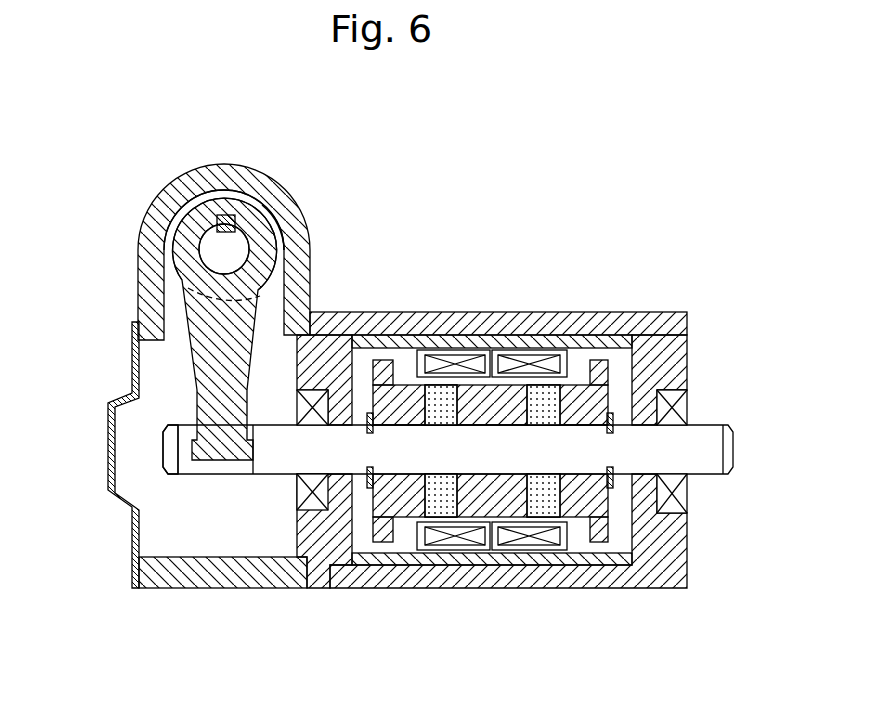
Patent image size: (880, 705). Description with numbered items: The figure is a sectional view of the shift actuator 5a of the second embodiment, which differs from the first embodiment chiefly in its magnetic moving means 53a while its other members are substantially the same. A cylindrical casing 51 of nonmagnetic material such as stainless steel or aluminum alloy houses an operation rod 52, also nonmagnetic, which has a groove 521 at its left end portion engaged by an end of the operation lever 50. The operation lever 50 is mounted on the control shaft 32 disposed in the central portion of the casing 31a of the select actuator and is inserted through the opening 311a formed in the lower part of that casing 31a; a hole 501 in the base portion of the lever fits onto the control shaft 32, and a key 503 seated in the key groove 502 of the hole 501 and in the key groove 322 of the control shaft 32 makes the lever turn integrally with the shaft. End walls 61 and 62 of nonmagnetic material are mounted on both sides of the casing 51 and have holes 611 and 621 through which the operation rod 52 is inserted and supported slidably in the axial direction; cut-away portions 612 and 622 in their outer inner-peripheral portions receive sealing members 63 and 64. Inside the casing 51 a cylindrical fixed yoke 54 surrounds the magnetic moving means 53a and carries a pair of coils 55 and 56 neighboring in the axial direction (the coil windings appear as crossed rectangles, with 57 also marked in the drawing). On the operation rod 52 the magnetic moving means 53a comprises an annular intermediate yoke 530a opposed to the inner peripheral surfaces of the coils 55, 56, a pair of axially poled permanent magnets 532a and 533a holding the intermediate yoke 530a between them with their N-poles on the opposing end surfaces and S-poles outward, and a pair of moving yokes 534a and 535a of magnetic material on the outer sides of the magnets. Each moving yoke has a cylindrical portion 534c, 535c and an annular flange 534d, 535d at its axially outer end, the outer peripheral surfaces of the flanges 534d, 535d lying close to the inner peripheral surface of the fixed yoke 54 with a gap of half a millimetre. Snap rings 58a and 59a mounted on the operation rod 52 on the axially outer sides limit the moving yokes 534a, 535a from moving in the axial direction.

The shift actuator 5a is at (521, 278).
The casing 31a is at (236, 165).
The control shaft 32 is at (170, 243).
The opening 311a is at (173, 305).
The key groove 322 is at (200, 245).
The operation lever 50 is at (193, 388).
The hole 501 is at (280, 222).
The key groove 502 is at (262, 212).
The key 503 is at (222, 214).
The casing 51 is at (585, 312).
The operation rod 52 is at (713, 425).
The groove 521 is at (205, 472).
The magnetic moving means 53a is at (368, 383).
The intermediate yoke 530a is at (497, 560).
The permanent magnet 532a is at (543, 517).
The permanent magnet 533a is at (437, 535).
The moving yoke 534a is at (597, 432).
The cylindrical portion 534c is at (600, 542).
The flange 534d is at (605, 360).
The moving yoke 535a is at (397, 430).
The cylindrical portion 535c is at (402, 522).
The flange 535d is at (383, 360).
The fixed yoke 54 is at (433, 312).
The coil 55 is at (545, 352).
The coil 56 is at (465, 350).
The coil 57 is at (527, 355).
The snap ring 58a is at (613, 425).
The snap ring 59a is at (367, 430).
The end wall 61 is at (686, 347).
The hole 611 is at (690, 476).
The cut-away portion 612 is at (668, 387).
The end wall 62 is at (313, 362).
The hole 621 is at (360, 466).
The cut-away portion 622 is at (196, 397).
The sealing member 63 is at (687, 410).
The sealing member 64 is at (308, 408).